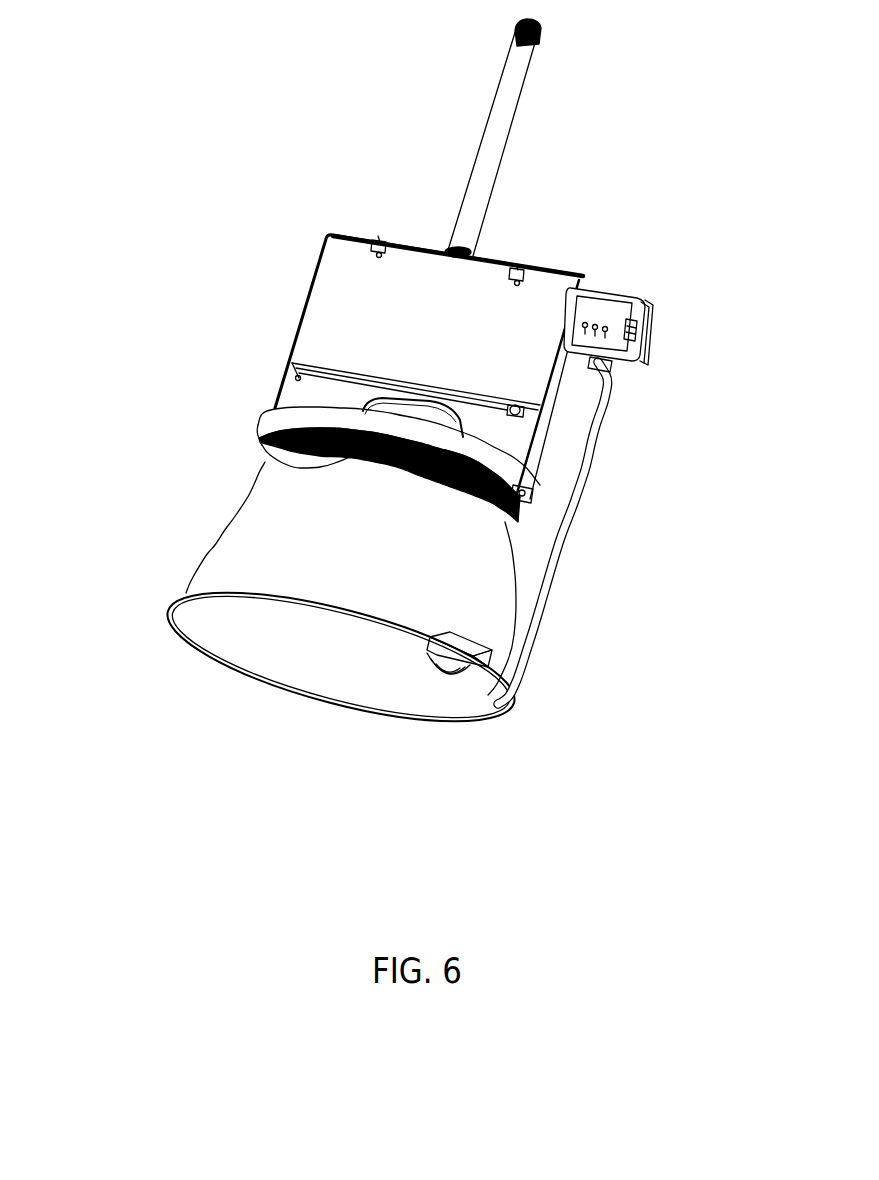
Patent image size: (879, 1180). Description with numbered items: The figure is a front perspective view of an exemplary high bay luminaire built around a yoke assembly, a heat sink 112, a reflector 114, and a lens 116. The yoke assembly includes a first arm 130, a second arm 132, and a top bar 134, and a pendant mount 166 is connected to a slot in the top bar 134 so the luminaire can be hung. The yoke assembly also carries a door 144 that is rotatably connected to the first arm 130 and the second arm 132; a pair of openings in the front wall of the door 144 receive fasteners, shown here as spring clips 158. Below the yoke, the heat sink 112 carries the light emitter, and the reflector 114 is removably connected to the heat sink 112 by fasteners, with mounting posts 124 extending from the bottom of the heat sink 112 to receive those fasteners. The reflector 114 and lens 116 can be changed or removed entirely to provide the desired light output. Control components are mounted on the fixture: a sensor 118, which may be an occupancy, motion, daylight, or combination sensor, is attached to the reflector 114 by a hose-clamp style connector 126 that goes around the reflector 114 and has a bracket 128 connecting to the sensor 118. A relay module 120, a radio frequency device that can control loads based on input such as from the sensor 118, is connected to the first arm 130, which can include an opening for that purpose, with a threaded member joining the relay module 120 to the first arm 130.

The heat sink 112 is at (263, 415).
The reflector 114 is at (204, 545).
The lens 116 is at (338, 676).
The sensor 118 is at (468, 673).
The relay module 120 is at (652, 312).
The mounting posts 124 is at (264, 461).
The hose-clamp style connector 126 is at (168, 618).
The bracket 128 is at (423, 650).
The first arm 130 is at (538, 452).
The second arm 132 is at (433, 284).
The top bar 134 is at (560, 268).
The door 144 is at (337, 265).
The spring clips 158 is at (377, 240).
The pendant mount 166 is at (495, 162).